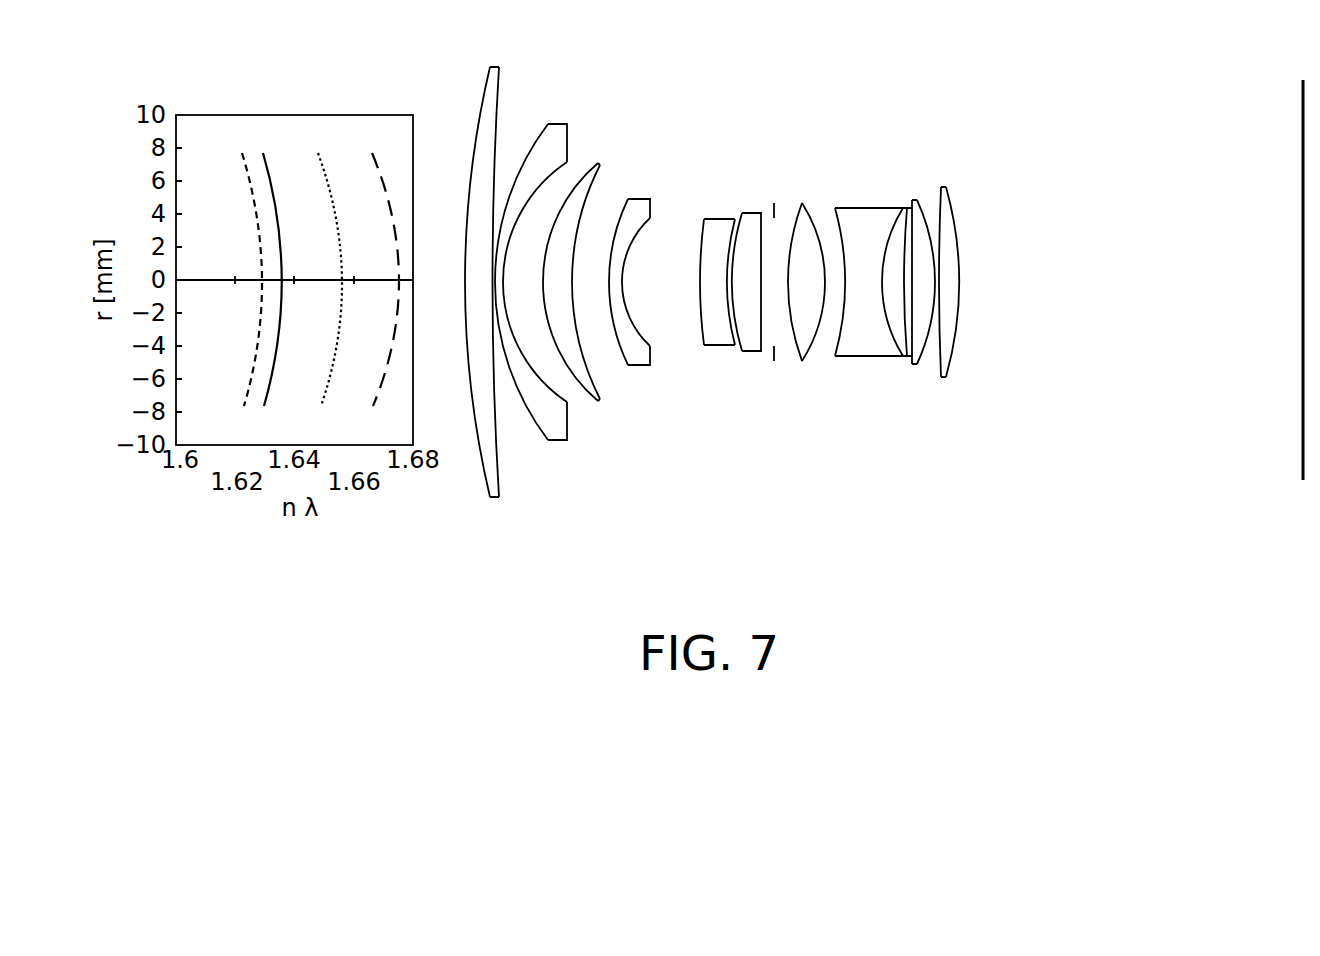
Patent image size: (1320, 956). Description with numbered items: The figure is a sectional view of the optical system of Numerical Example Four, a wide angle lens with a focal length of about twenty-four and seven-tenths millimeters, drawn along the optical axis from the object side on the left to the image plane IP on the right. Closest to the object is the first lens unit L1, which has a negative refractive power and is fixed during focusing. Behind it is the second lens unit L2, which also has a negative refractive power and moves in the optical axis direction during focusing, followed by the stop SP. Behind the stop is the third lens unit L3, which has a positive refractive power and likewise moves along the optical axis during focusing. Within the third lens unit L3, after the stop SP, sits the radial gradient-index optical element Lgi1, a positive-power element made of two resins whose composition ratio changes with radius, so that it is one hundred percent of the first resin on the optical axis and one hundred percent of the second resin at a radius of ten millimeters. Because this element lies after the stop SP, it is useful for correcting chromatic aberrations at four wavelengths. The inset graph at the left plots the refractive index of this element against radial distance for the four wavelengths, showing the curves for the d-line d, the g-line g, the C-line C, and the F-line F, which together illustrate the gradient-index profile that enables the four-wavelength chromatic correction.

The first lens unit L1 is at (476, 527).
The second lens unit L2 is at (631, 527).
The third lens unit L3 is at (880, 349).
The stop SP is at (777, 263).
The image plane IP is at (1301, 264).
The radial gradient-index optical element Lgi1 is at (900, 208).
The d-line d is at (268, 268).
The g-line g is at (377, 266).
The C-line C is at (246, 296).
The F-line F is at (325, 297).